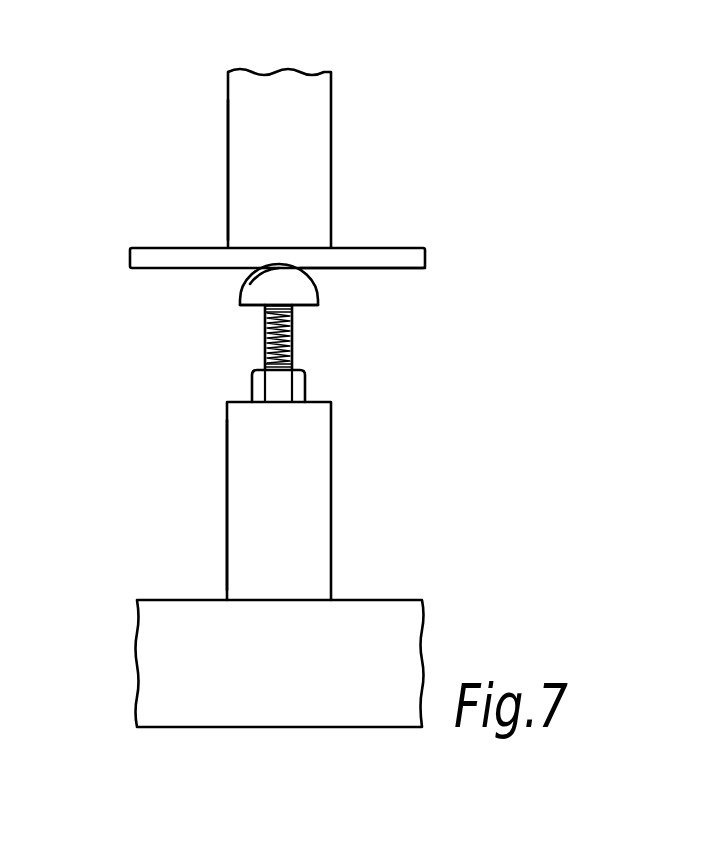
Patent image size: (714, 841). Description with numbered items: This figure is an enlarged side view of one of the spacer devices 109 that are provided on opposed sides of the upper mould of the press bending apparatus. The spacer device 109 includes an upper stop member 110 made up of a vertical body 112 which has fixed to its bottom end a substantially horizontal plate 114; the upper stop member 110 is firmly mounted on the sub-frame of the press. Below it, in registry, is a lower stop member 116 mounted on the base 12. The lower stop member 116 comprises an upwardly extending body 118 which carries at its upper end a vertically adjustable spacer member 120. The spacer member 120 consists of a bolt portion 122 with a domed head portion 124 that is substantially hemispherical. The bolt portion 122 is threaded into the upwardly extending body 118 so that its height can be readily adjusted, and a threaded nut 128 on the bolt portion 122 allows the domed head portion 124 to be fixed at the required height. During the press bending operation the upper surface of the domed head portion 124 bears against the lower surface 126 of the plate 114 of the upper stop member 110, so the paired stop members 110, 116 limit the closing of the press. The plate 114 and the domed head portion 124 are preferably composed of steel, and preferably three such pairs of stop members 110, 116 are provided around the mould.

The base 12 is at (368, 627).
The spacer device 109 is at (152, 374).
The upper stop member 110 is at (332, 126).
The vertical body 112 is at (228, 131).
The horizontal plate 114 is at (381, 247).
The lower stop member 116 is at (310, 497).
The upwardly extending body 118 is at (227, 460).
The spacer member 120 is at (312, 290).
The bolt portion 122 is at (292, 350).
The domed head portion 124 is at (268, 291).
The lower surface 126 is at (404, 270).
The threaded nut 128 is at (303, 388).